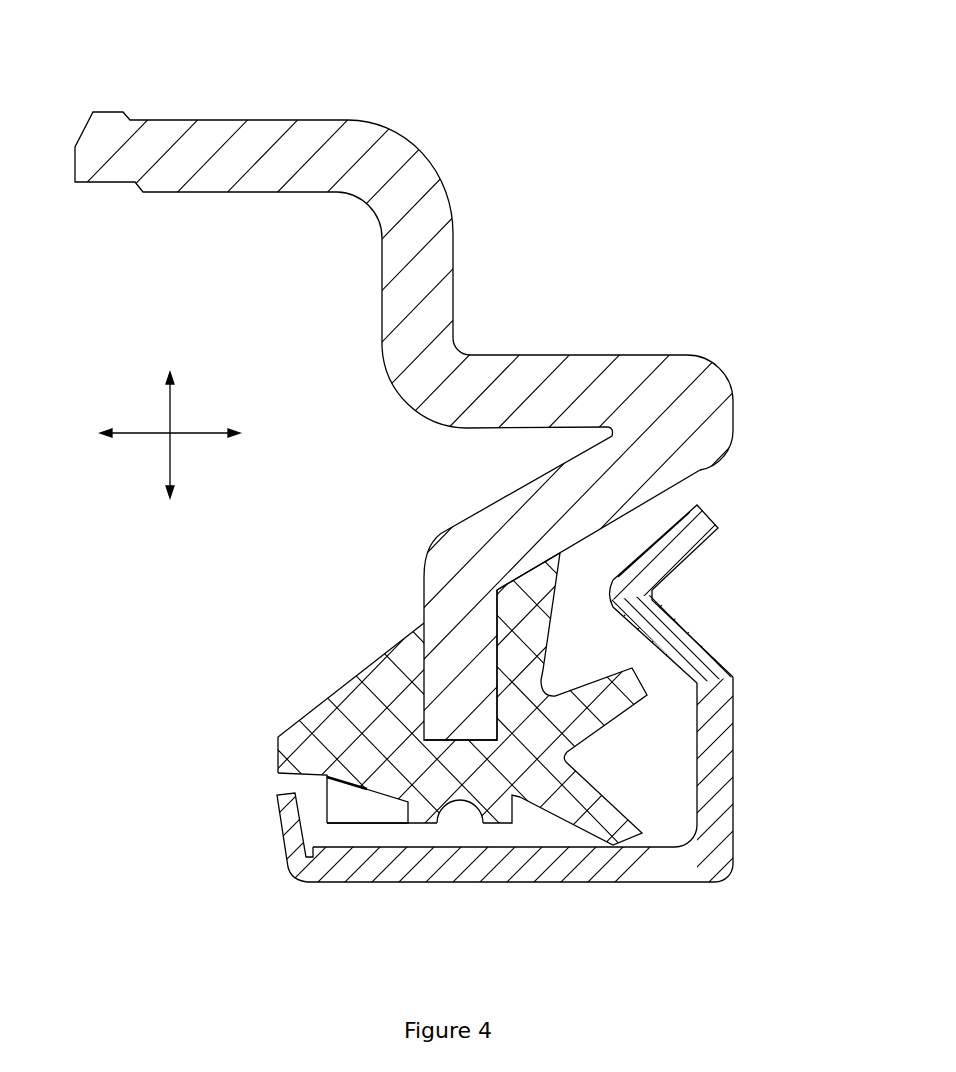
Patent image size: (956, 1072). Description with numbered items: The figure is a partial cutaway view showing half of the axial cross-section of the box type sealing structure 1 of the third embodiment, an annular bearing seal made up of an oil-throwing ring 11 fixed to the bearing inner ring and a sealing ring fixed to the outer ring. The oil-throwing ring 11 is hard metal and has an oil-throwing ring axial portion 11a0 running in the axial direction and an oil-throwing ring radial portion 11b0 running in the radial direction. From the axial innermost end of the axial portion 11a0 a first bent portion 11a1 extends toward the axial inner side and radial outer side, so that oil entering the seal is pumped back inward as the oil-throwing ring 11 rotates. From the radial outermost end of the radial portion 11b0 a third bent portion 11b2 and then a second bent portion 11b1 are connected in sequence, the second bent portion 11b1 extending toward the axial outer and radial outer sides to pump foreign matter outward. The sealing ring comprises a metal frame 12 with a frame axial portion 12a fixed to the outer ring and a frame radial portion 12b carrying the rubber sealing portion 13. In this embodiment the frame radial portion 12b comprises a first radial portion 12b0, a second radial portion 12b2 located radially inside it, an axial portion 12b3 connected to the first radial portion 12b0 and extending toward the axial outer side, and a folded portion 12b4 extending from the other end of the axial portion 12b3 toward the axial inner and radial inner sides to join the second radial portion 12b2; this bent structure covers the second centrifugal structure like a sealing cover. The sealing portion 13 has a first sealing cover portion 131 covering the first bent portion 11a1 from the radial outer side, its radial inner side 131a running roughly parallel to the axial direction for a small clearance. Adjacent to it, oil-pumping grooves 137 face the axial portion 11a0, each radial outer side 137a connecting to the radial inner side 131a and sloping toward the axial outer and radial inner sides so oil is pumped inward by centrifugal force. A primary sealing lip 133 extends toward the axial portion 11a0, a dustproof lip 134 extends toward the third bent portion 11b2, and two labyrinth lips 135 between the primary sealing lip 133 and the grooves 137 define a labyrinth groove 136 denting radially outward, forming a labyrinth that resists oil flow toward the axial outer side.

The box type sealing structure 1 is at (50, 44).
The oil-throwing ring 11 is at (717, 873).
The oil-throwing ring axial portion 11a0 is at (520, 873).
The first bent portion 11a1 is at (290, 833).
The oil-throwing ring radial portion 11b0 is at (722, 745).
The second bent portion 11b1 is at (698, 533).
The third bent portion 11b2 is at (692, 653).
The frame 12 is at (390, 135).
The frame axial portion 12a is at (207, 130).
The frame radial portion 12b is at (452, 248).
The first radial portion 12b0 is at (442, 305).
The second radial portion 12b2 is at (422, 608).
The axial portion 12b3 is at (583, 363).
The folded portion 12b4 is at (533, 513).
The sealing portion 13 is at (367, 663).
The first sealing cover portion 131 is at (293, 732).
The radial inner side of the first sealing cover portion 131a is at (277, 767).
The primary sealing lip 133 is at (620, 833).
The dustproof lip 134 is at (633, 698).
The labyrinth lip 135 is at (420, 815).
The labyrinth groove 136 is at (462, 817).
The oil-pumping groove 137 is at (373, 810).
The radial outer side of the oil-pumping groove 137a is at (373, 810).